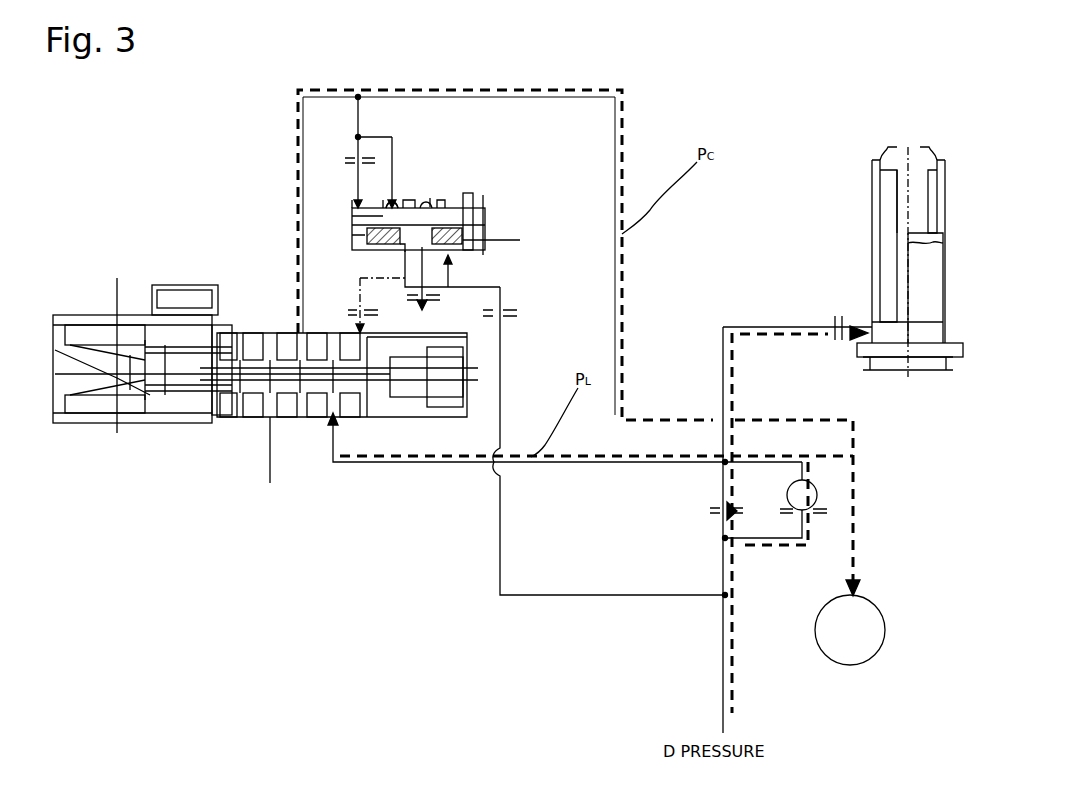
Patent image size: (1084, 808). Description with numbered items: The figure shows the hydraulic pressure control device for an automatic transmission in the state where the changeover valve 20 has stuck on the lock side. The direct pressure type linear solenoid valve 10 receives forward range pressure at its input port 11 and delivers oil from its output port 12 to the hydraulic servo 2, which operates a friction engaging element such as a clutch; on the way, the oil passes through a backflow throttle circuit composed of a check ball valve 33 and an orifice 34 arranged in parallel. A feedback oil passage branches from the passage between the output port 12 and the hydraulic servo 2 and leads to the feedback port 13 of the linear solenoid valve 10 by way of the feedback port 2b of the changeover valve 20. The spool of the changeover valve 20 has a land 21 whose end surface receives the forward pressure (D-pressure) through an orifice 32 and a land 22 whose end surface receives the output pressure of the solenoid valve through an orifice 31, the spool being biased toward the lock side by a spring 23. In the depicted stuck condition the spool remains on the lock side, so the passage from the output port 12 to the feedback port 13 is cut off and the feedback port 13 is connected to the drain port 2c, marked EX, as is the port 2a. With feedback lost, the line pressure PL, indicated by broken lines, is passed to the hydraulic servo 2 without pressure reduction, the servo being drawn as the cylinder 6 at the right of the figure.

The hydraulic servo 2 is at (849, 666).
The port 2a is at (396, 206).
The feedback port 2b is at (407, 248).
The drain port 2c is at (428, 252).
The hydraulic servo cylinder 6 is at (908, 143).
The linear solenoid valve 10 is at (183, 266).
The input port 11 is at (330, 416).
The output port 12 is at (295, 322).
The feedback port 13 is at (364, 333).
The changeover valve 20 is at (487, 192).
The land 21 is at (430, 207).
The land 22 is at (388, 207).
The spring 23 is at (356, 207).
The orifice 31 is at (352, 160).
The orifice 32 is at (502, 312).
The check ball valve 33 is at (810, 488).
The orifice 34 is at (718, 511).